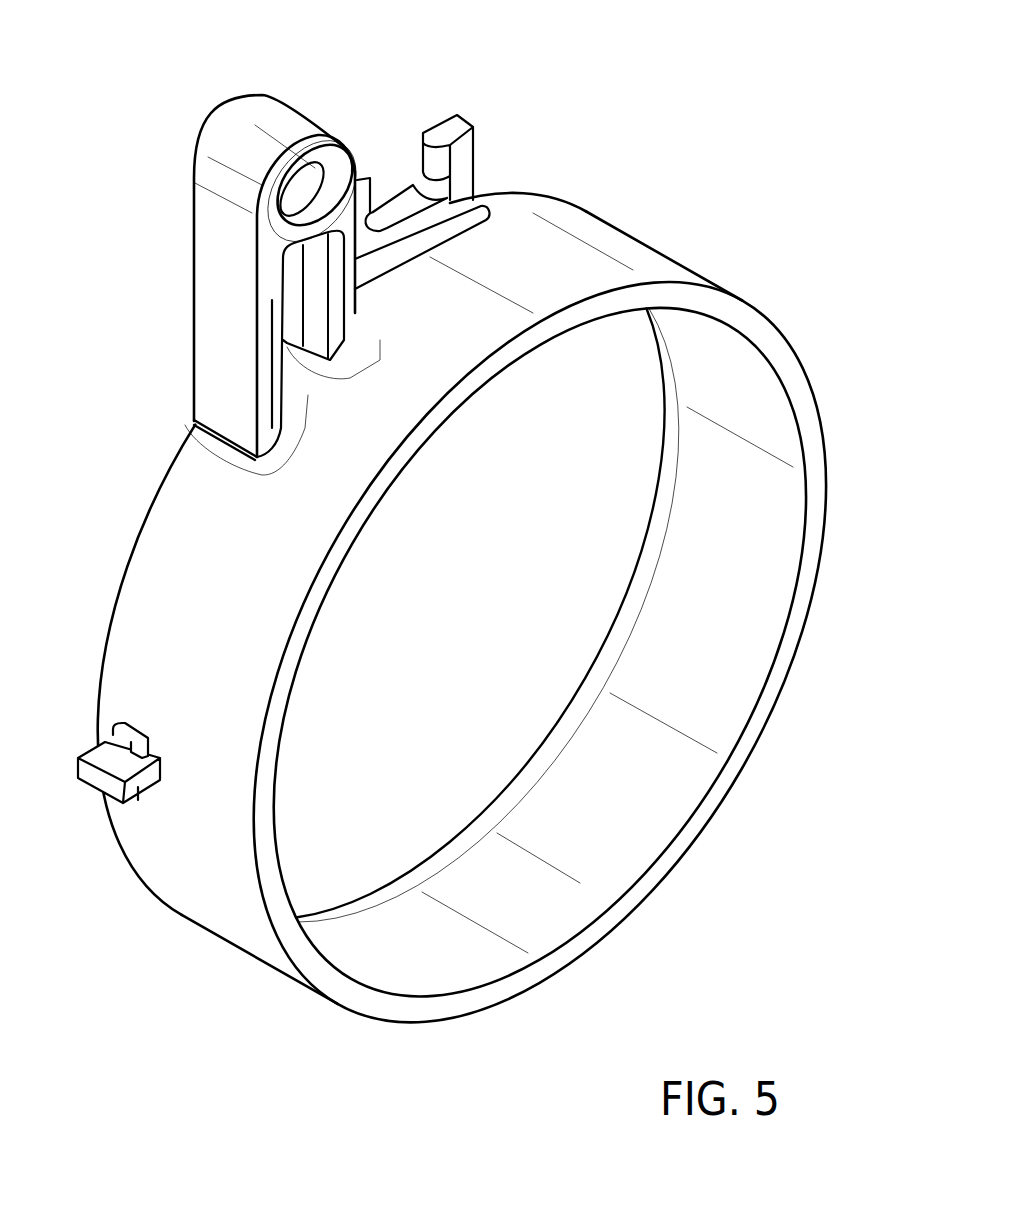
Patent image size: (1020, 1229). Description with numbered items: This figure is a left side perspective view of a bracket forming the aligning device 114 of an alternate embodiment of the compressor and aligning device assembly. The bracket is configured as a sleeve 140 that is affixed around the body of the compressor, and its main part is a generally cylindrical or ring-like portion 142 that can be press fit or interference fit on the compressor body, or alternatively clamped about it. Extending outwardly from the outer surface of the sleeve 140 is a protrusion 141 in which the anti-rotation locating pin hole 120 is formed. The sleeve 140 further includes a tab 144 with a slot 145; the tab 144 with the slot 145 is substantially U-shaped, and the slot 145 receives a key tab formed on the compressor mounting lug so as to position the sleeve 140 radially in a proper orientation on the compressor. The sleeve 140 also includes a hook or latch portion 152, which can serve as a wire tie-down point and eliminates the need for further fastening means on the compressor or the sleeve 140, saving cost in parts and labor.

The aligning device 114 is at (693, 153).
The anti-rotation locating pin hole 120 is at (310, 189).
The sleeve 140 is at (648, 273).
The protrusion 141 is at (203, 284).
The ring-like portion 142 is at (146, 594).
The tab 144 is at (472, 197).
The slot 145 is at (380, 206).
The hook or latch portion 152 is at (98, 781).